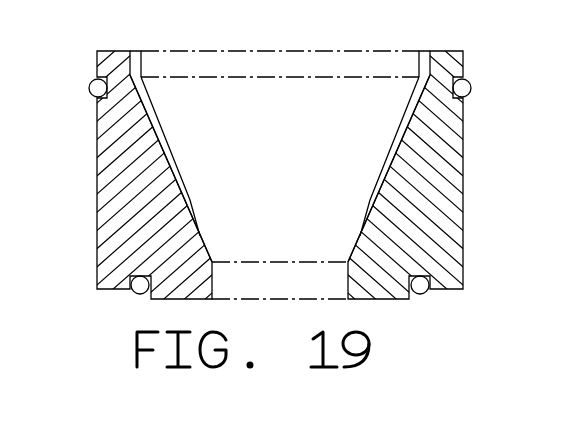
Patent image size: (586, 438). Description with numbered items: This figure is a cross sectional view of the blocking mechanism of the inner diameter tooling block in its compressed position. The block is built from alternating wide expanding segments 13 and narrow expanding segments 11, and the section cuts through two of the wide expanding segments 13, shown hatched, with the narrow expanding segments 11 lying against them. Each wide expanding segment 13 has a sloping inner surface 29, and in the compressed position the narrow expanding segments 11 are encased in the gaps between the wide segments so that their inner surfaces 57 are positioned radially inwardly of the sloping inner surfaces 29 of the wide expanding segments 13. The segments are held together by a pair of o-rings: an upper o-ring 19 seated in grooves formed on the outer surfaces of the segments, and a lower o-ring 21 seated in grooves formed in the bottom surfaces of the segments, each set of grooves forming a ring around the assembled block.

The narrow expanding segment 11 is at (137, 60).
The wide expanding segment 13 is at (108, 63).
The o-ring 19 is at (471, 82).
The o-ring 21 is at (421, 296).
The sloping inner surface 29 is at (167, 143).
The inner surface 57 is at (158, 115).